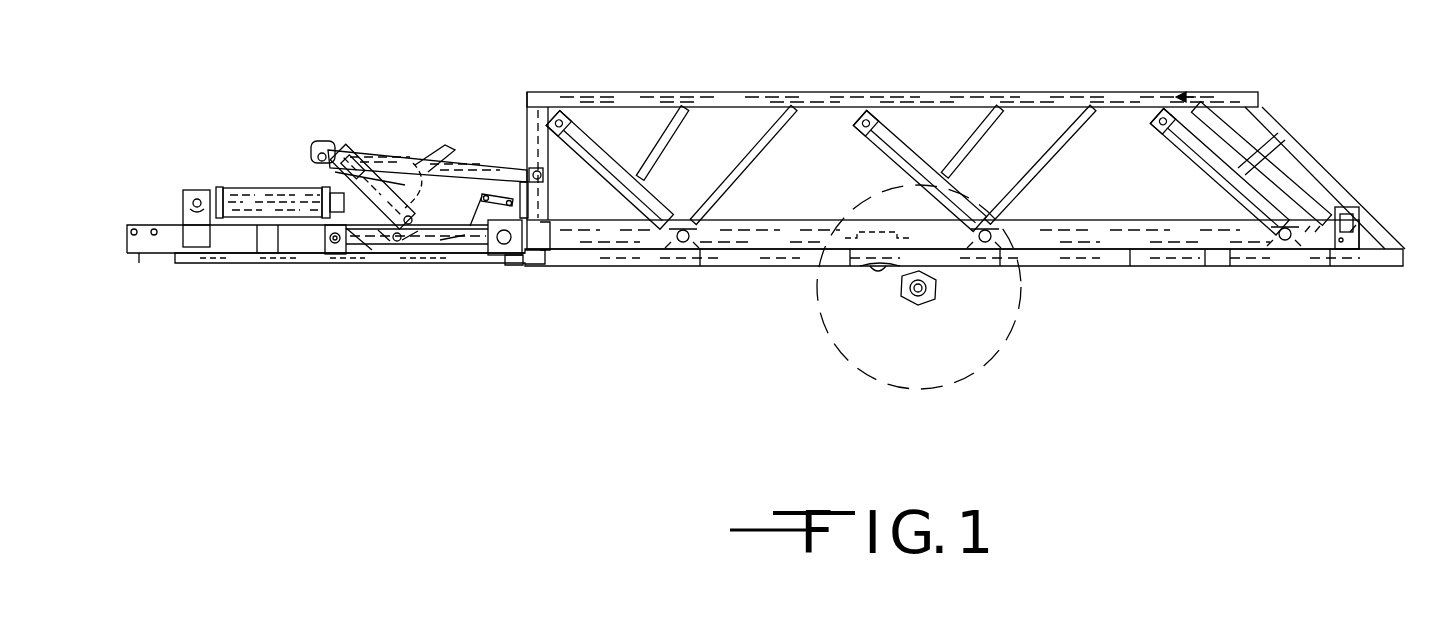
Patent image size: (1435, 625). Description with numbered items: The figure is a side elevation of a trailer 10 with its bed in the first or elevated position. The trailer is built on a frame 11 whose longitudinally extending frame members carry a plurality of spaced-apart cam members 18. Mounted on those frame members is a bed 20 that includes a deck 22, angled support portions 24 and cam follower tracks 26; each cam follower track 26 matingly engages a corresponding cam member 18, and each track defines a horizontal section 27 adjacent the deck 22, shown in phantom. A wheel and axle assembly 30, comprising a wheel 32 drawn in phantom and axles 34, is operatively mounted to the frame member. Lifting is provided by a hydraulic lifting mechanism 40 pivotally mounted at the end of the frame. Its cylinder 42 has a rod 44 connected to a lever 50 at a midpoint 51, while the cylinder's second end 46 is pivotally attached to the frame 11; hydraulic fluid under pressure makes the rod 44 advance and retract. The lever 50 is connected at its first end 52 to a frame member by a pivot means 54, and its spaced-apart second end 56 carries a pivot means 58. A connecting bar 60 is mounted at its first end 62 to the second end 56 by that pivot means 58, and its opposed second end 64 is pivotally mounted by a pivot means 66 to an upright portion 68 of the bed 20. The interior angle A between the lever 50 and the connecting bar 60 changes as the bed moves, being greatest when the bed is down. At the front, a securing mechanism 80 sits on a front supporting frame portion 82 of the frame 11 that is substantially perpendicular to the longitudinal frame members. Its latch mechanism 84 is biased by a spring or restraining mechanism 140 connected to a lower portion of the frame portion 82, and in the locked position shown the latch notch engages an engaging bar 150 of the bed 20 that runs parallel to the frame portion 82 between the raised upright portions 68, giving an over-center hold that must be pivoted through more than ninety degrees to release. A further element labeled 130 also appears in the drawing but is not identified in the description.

The trailer 10 is at (140, 122).
The frame 11 is at (518, 280).
The cam members 18 is at (688, 250).
The bed 20 is at (1233, 86).
The deck 22 is at (1122, 240).
The angled support portions 24 is at (668, 158).
The cam follower tracks 26 is at (617, 150).
The horizontal section 27 is at (745, 266).
The wheel and axle assembly 30 is at (880, 292).
The wheel 32 is at (997, 360).
The axles 34 is at (937, 288).
The lifting mechanism 40 is at (204, 180).
The cylinder 42 is at (259, 186).
The rod 44 is at (330, 250).
The second end 46 is at (183, 204).
The lever 50 is at (310, 178).
The midpoint 51 is at (368, 250).
The first end 52 is at (428, 252).
The pivot means 54 is at (394, 248).
The second end 56 is at (323, 142).
The pivot means 58 is at (315, 140).
The connecting bar 60 is at (420, 182).
The first end 62 is at (351, 140).
The second end 64 is at (542, 180).
The pivot means 66 is at (513, 178).
The upright portion 68 is at (535, 170).
The securing mechanism 80 is at (452, 252).
The front supporting frame portion 82 is at (512, 261).
The latch mechanism 84 is at (493, 182).
The mounting block 130 is at (452, 230).
The spring or restraining mechanism 140 is at (540, 266).
The engaging bar 150 is at (546, 252).
The interior angle A is at (425, 172).